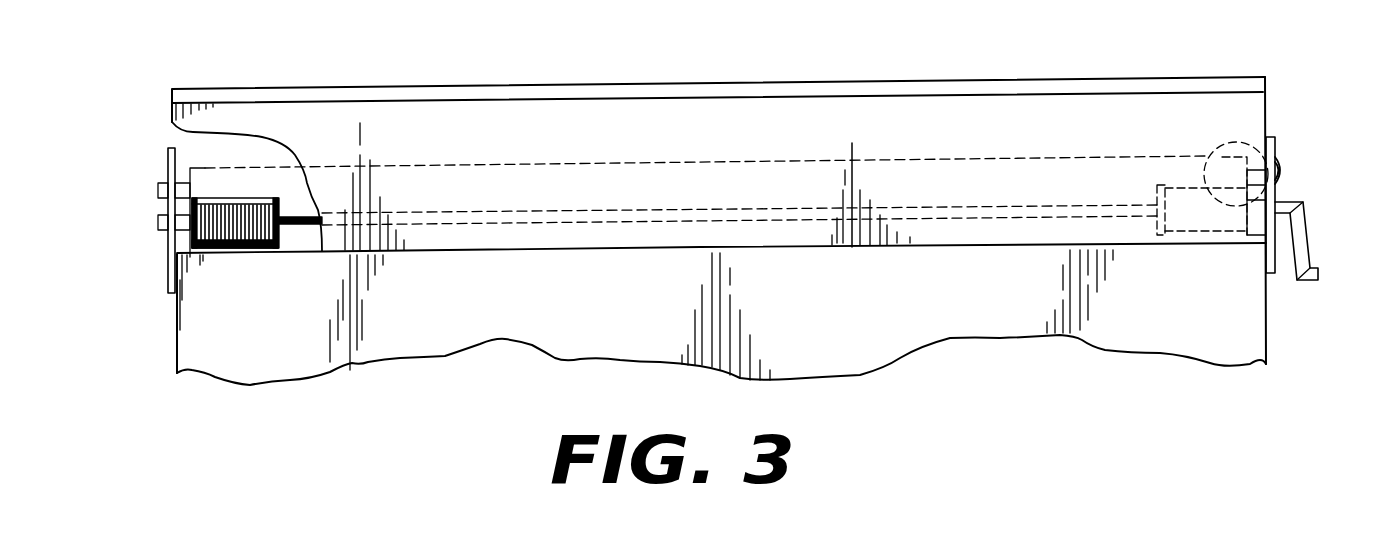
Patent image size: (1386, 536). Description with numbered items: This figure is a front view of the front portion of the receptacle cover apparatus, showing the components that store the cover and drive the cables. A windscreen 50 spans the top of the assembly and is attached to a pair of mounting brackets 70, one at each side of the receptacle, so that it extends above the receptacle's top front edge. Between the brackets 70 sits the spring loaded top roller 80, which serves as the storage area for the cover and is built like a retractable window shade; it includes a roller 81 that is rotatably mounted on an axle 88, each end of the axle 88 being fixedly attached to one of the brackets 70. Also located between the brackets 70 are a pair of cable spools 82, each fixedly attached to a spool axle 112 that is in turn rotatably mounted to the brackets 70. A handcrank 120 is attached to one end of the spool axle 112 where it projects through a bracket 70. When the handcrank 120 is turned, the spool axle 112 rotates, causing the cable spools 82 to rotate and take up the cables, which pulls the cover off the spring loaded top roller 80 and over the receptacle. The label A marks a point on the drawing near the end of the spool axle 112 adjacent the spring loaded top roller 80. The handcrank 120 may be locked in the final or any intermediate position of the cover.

The windscreen 50 is at (1193, 108).
The mounting bracket 70 is at (1274, 147).
The spring loaded top roller 80 is at (1205, 152).
The roller 81 is at (828, 173).
The cable spool 82 is at (192, 256).
The axle 88 is at (1283, 177).
The spool axle 112 is at (492, 220).
The handcrank 120 is at (1310, 263).
The point A is at (1224, 202).